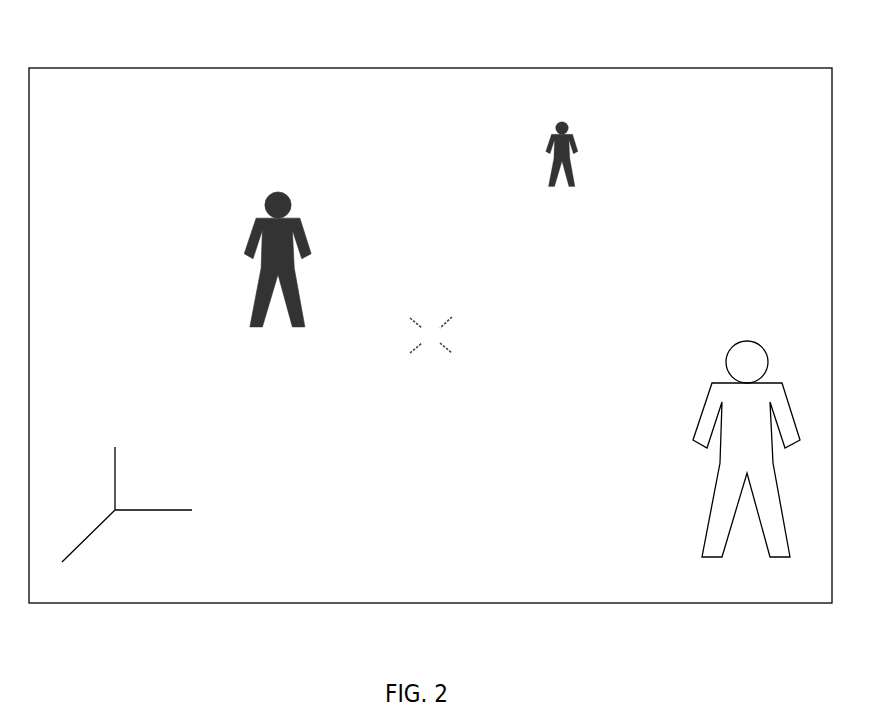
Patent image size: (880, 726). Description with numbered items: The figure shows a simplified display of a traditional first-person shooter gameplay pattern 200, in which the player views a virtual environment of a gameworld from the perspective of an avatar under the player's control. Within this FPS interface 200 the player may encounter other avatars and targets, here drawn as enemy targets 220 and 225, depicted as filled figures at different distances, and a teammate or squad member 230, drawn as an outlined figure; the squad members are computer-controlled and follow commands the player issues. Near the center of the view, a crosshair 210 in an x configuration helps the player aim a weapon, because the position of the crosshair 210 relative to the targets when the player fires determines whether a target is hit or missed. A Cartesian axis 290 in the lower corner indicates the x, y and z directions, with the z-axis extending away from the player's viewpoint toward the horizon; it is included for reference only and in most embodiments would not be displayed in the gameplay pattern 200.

The FPS gameplay pattern 200 is at (433, 68).
The crosshair 210 is at (431, 344).
The enemy target 220 is at (277, 271).
The enemy target 225 is at (562, 165).
The teammate or squad member 230 is at (746, 460).
The Cartesian axis 290 is at (119, 518).